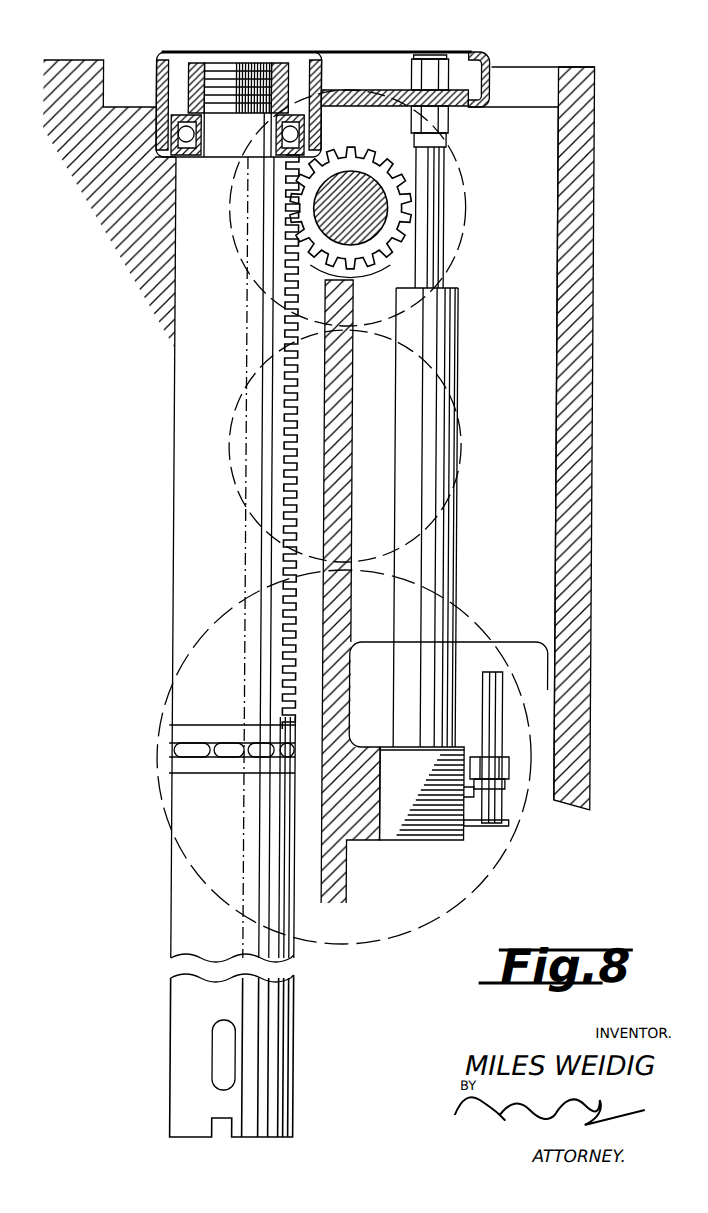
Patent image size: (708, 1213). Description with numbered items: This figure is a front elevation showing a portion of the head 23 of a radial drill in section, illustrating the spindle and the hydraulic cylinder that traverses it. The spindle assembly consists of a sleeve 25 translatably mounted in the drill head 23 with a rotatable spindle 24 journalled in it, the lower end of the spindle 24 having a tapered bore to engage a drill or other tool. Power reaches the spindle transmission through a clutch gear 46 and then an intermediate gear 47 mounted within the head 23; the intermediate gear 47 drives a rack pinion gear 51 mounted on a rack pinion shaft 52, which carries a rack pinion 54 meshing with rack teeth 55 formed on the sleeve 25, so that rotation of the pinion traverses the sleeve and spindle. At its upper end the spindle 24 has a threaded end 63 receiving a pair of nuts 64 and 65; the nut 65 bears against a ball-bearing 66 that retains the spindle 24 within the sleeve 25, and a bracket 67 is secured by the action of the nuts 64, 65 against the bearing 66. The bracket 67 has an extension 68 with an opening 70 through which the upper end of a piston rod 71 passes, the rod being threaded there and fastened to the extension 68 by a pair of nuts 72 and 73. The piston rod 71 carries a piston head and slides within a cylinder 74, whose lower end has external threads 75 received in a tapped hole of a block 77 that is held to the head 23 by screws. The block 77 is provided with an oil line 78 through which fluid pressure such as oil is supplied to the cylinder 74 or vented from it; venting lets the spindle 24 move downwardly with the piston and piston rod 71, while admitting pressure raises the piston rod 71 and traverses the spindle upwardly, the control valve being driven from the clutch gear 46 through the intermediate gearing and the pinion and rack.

The head 23 is at (145, 212).
The spindle 24 is at (224, 218).
The sleeve 25 is at (190, 342).
The clutch gear 46 is at (222, 615).
The intermediate gear 47 is at (468, 446).
The rack pinion gear 51 is at (452, 272).
The rack pinion shaft 52 is at (357, 200).
The rack pinion 54 is at (405, 200).
The rack teeth 55 is at (300, 455).
The threaded end 63 is at (237, 75).
The nut 64 is at (187, 60).
The nut 65 is at (187, 100).
The ball-bearing 66 is at (197, 158).
The bracket 67 is at (312, 60).
The extension 68 is at (486, 62).
The opening 70 is at (445, 104).
The piston rod 71 is at (432, 250).
The nut 72 is at (440, 75).
The nut 73 is at (445, 125).
The cylinder 74 is at (458, 570).
The external threads 75 is at (398, 745).
The block 77 is at (440, 832).
The oil line 78 is at (498, 705).